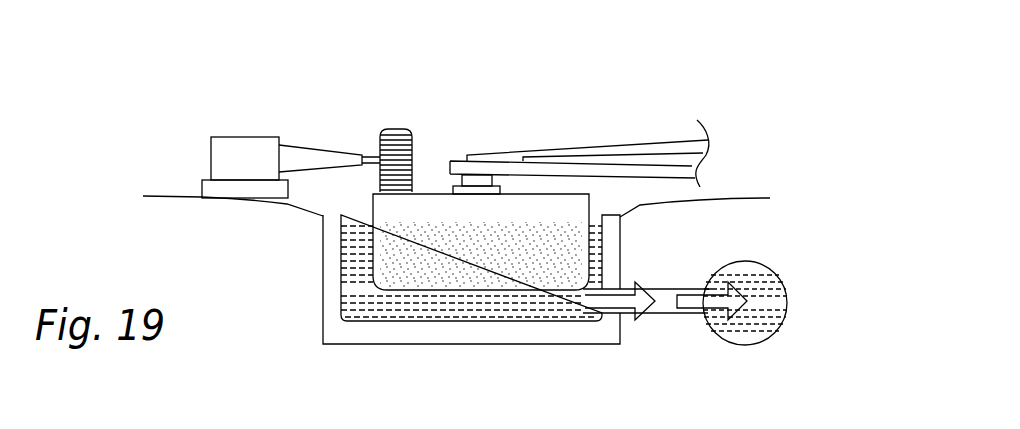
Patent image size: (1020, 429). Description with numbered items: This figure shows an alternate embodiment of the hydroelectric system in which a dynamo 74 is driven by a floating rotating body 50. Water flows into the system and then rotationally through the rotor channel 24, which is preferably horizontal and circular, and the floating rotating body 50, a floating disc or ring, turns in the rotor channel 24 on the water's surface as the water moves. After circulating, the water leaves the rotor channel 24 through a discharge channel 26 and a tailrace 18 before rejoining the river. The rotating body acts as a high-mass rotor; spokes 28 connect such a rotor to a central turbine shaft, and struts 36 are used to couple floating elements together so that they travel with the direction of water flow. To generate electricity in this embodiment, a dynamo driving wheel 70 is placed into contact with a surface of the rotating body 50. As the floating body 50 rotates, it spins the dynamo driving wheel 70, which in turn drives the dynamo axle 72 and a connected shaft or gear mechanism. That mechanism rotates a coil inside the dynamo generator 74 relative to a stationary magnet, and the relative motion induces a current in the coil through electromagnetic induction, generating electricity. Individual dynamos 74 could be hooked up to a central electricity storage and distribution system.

The tailrace 18 is at (750, 345).
The rotor channel 24 is at (322, 313).
The discharge channel 26 is at (665, 313).
The spokes 28 is at (590, 152).
The struts 36 is at (678, 168).
The floating rotating body 50 is at (421, 194).
The dynamo driving wheel 70 is at (396, 128).
The dynamo axle 72 is at (370, 155).
The dynamo generator 74 is at (238, 137).